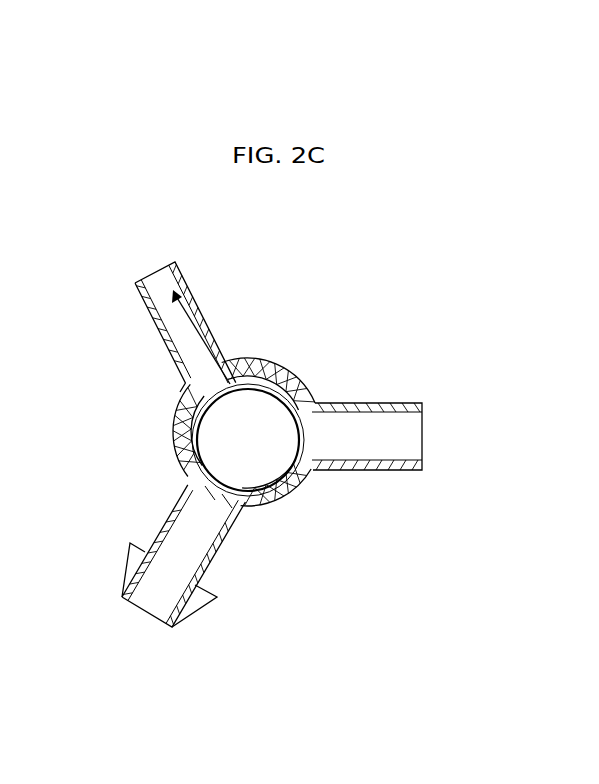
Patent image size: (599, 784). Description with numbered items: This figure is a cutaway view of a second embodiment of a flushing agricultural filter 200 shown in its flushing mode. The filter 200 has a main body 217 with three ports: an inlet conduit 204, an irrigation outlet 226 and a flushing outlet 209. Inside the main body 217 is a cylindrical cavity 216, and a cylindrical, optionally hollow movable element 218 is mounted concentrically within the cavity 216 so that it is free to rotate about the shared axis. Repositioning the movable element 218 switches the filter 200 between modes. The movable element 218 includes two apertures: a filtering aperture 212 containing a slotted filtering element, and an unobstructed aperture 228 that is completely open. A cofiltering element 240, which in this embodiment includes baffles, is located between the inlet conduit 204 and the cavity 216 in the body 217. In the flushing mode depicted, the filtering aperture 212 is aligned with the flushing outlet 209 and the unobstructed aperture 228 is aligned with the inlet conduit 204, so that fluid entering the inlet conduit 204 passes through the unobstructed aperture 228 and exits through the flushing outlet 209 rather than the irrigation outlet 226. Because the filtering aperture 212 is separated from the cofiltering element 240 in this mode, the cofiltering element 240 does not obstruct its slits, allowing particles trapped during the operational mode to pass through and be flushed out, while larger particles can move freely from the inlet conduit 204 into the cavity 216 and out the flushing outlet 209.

The filter 200 is at (330, 117).
The inlet conduit 204 is at (217, 567).
The flushing outlet 209 is at (203, 300).
The filtering aperture 212 is at (228, 386).
The cylindrical cavity 216 is at (268, 468).
The main body 217 is at (175, 445).
The movable element 218 is at (197, 414).
The irrigation outlet 226 is at (345, 403).
The unobstructed aperture 228 is at (222, 490).
The cofiltering element 240 is at (230, 502).